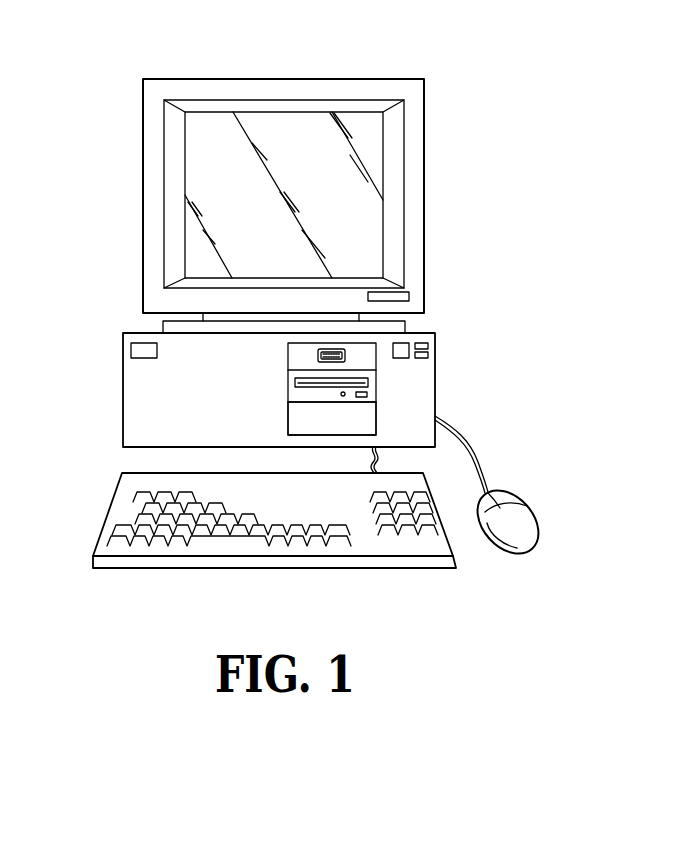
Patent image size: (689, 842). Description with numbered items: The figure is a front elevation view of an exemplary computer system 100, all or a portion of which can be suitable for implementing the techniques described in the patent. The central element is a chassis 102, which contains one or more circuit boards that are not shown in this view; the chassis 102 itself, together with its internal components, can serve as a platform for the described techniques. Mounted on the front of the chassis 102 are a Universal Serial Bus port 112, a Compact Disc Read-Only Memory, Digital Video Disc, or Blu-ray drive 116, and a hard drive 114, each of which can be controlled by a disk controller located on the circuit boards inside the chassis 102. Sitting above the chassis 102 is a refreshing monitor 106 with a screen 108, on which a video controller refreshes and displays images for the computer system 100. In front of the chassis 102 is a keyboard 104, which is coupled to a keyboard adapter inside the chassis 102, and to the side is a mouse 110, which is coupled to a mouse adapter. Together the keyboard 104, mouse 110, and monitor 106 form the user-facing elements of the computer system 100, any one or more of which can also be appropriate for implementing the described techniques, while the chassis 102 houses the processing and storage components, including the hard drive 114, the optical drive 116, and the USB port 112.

The computer system 100 is at (420, 61).
The chassis 102 is at (123, 391).
The keyboard 104 is at (107, 512).
The refreshing monitor 106 is at (200, 79).
The screen 108 is at (222, 197).
The mouse 110 is at (525, 505).
The Universal Serial Bus (USB) port 112 is at (345, 353).
The hard drive 114 is at (368, 417).
The CD-ROM, DVD, or Blu-ray drive 116 is at (370, 387).